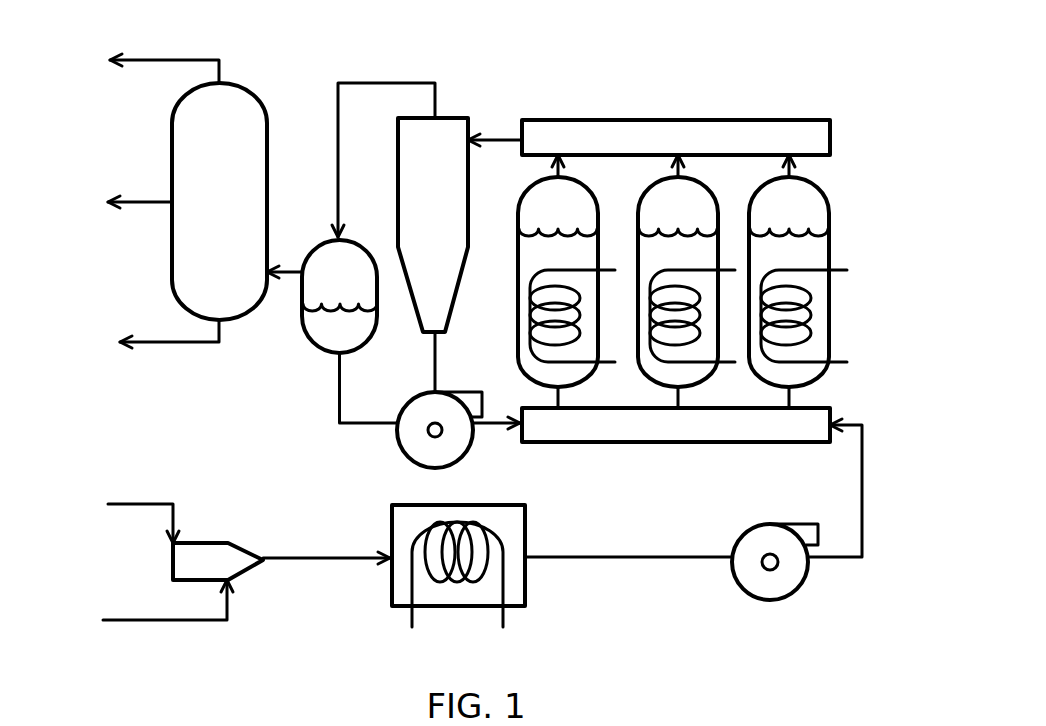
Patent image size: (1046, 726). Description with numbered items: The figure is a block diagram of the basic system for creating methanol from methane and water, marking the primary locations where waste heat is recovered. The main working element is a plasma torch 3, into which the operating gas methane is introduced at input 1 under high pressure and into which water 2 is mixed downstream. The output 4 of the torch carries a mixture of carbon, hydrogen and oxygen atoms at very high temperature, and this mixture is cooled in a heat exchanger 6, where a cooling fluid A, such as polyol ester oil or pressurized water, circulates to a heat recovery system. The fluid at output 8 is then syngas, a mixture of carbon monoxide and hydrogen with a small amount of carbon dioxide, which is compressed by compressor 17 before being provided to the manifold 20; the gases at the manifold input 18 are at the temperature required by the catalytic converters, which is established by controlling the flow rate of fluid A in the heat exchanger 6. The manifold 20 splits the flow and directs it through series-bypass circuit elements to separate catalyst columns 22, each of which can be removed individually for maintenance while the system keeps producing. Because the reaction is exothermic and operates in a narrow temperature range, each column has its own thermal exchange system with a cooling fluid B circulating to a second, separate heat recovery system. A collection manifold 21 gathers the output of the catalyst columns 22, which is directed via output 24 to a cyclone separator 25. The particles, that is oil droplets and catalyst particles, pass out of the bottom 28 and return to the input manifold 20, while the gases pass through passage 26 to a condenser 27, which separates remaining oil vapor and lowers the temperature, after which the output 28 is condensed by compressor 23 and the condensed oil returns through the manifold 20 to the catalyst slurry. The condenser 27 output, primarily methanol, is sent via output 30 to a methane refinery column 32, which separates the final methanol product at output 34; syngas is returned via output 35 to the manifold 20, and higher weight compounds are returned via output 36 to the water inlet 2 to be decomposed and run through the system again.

The input 1 is at (124, 514).
The water inlet 2 is at (151, 612).
The plasma torch 3 is at (203, 558).
The output 4 is at (322, 563).
The heat exchanger 6 is at (513, 570).
The output 8 is at (605, 557).
The compressor 17 is at (770, 580).
The manifold input 18 is at (863, 462).
The manifold 20 is at (753, 427).
The collection manifold 21 is at (788, 133).
The catalyst columns 22 is at (772, 210).
The compressor 23 is at (450, 450).
The output 24 is at (498, 137).
The cyclone separator 25 is at (430, 193).
The gas passage 26 is at (390, 80).
The condenser 27 is at (330, 282).
The bottom output 28 is at (433, 362).
The output 30 is at (287, 268).
The methane refinery column 32 is at (222, 198).
The output 34 is at (114, 204).
The output 35 is at (139, 63).
The output 36 is at (138, 340).
The cooling fluid A is at (457, 651).
The cooling fluid B is at (819, 317).